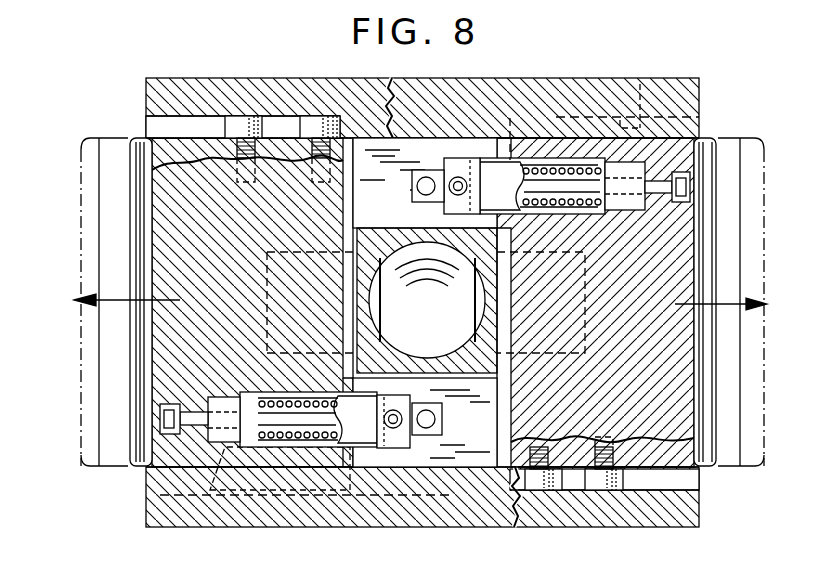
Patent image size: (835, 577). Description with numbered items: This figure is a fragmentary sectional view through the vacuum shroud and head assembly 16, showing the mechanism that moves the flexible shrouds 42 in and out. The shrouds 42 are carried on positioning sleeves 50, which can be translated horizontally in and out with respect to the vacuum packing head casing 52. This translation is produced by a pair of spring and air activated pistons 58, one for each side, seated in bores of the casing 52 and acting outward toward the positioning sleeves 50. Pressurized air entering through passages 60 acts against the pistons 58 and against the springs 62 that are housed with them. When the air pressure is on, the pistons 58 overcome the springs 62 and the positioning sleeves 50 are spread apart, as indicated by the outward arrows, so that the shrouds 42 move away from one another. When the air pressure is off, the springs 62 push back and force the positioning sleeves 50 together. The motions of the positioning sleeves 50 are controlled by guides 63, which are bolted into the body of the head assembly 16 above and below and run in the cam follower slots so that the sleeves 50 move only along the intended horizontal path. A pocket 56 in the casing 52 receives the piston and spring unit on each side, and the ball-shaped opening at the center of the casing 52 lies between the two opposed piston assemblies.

The vacuum shroud and head assembly 16 is at (701, 76).
The flexible shrouds 42 is at (137, 362).
The positioning sleeves 50 is at (81, 231).
The vacuum packing head casing 52 is at (470, 300).
The pocket 56 is at (482, 140).
The spring and air activated pistons 58 is at (520, 164).
The passages 60 is at (436, 186).
The springs 62 is at (575, 170).
The guides 63 is at (275, 116).